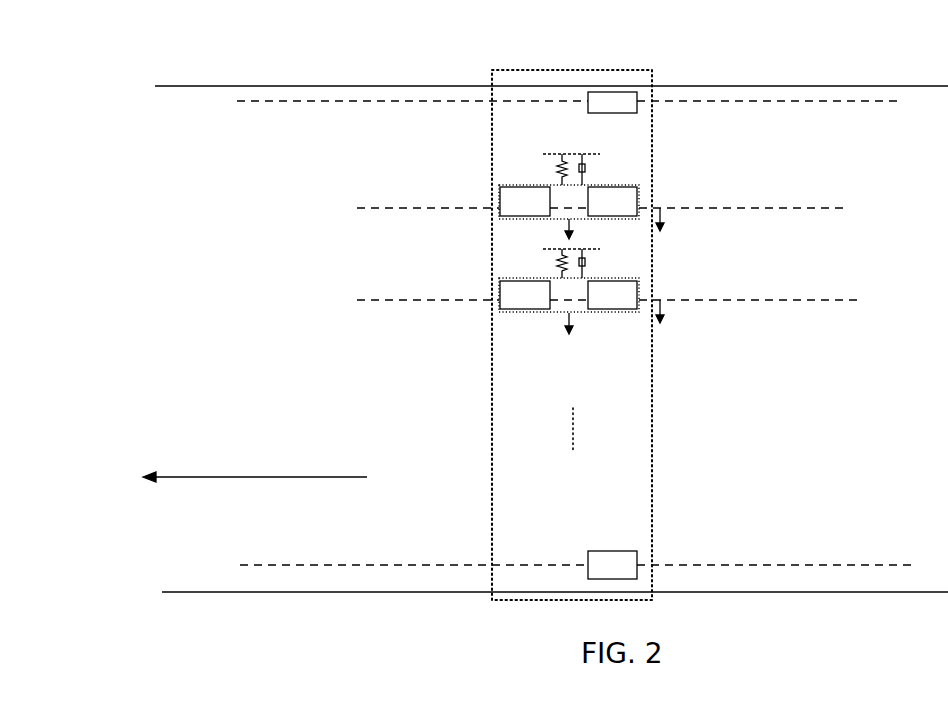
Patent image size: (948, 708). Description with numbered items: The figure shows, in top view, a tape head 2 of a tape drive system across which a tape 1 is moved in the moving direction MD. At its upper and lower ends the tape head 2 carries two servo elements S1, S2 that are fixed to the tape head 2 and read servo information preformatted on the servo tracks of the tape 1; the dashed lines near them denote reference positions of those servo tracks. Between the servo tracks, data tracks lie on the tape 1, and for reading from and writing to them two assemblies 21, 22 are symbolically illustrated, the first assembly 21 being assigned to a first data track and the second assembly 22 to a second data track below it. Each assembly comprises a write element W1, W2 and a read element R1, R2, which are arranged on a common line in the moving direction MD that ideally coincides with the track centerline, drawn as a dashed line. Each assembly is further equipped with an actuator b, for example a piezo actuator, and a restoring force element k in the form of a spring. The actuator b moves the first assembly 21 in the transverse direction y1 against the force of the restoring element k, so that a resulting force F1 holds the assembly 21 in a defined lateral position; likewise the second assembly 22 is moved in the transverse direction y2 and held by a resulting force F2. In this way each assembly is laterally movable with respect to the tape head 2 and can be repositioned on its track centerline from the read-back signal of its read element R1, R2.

The tape 1 is at (551, 363).
The tape head 2 is at (572, 72).
The first assembly 21 is at (600, 202).
The second assembly 22 is at (607, 313).
The servo element S1 is at (615, 91).
The servo element S2 is at (613, 578).
The write element W1 is at (520, 186).
The write element W2 is at (497, 297).
The read element R1 is at (617, 187).
The read element R2 is at (615, 308).
The restoring force element k is at (562, 168).
The actuator b is at (583, 167).
The resulting force F1 is at (592, 235).
The resulting force F2 is at (592, 331).
The transverse direction y1 is at (678, 230).
The transverse direction y2 is at (678, 325).
The moving direction MD is at (255, 459).